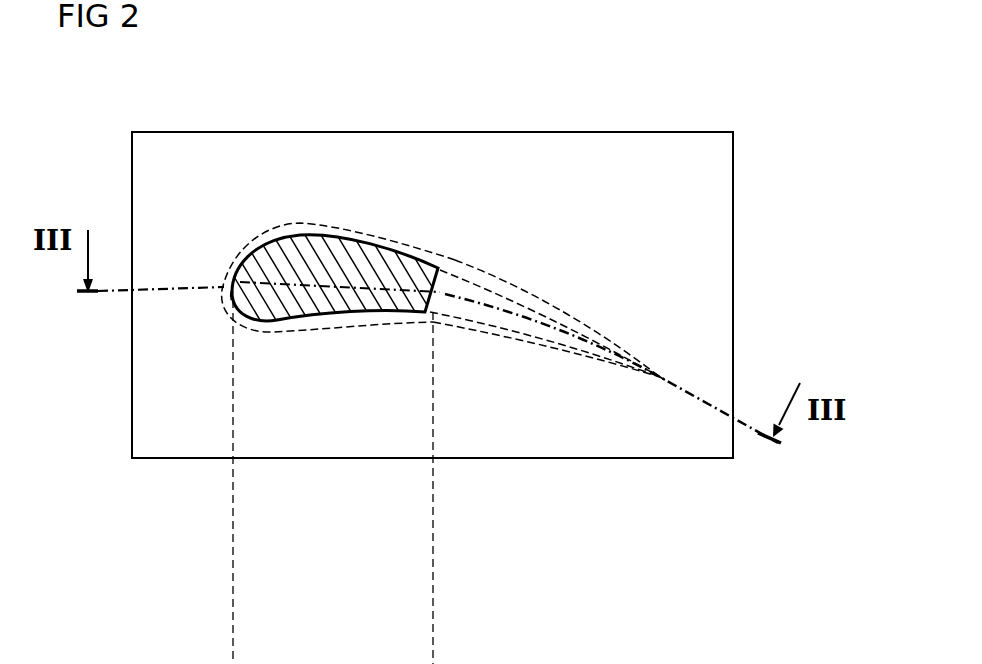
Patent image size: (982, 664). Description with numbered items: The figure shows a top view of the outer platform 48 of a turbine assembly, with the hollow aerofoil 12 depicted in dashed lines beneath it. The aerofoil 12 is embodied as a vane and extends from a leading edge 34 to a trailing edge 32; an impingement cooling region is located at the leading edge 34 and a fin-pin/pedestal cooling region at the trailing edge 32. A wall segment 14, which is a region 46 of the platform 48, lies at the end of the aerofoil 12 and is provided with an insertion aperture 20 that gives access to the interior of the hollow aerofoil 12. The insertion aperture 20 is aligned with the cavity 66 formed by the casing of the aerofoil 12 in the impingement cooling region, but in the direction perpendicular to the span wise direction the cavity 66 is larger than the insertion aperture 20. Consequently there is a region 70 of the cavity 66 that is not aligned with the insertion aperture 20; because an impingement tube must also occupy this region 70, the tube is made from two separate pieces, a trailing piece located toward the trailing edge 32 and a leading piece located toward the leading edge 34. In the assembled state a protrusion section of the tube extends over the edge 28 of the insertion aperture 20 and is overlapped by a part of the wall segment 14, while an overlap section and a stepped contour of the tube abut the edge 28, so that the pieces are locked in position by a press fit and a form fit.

The hollow aerofoil 12 is at (264, 229).
The wall segment 14 is at (705, 182).
The insertion aperture 20 is at (377, 262).
The edge of the insertion aperture 28 is at (446, 277).
The trailing edge 32 is at (660, 377).
The leading edge 34 is at (224, 303).
The region of the platform 46 is at (327, 184).
The outer platform 48 is at (705, 233).
The cavity 66 is at (473, 296).
The region of the cavity 70 is at (521, 304).